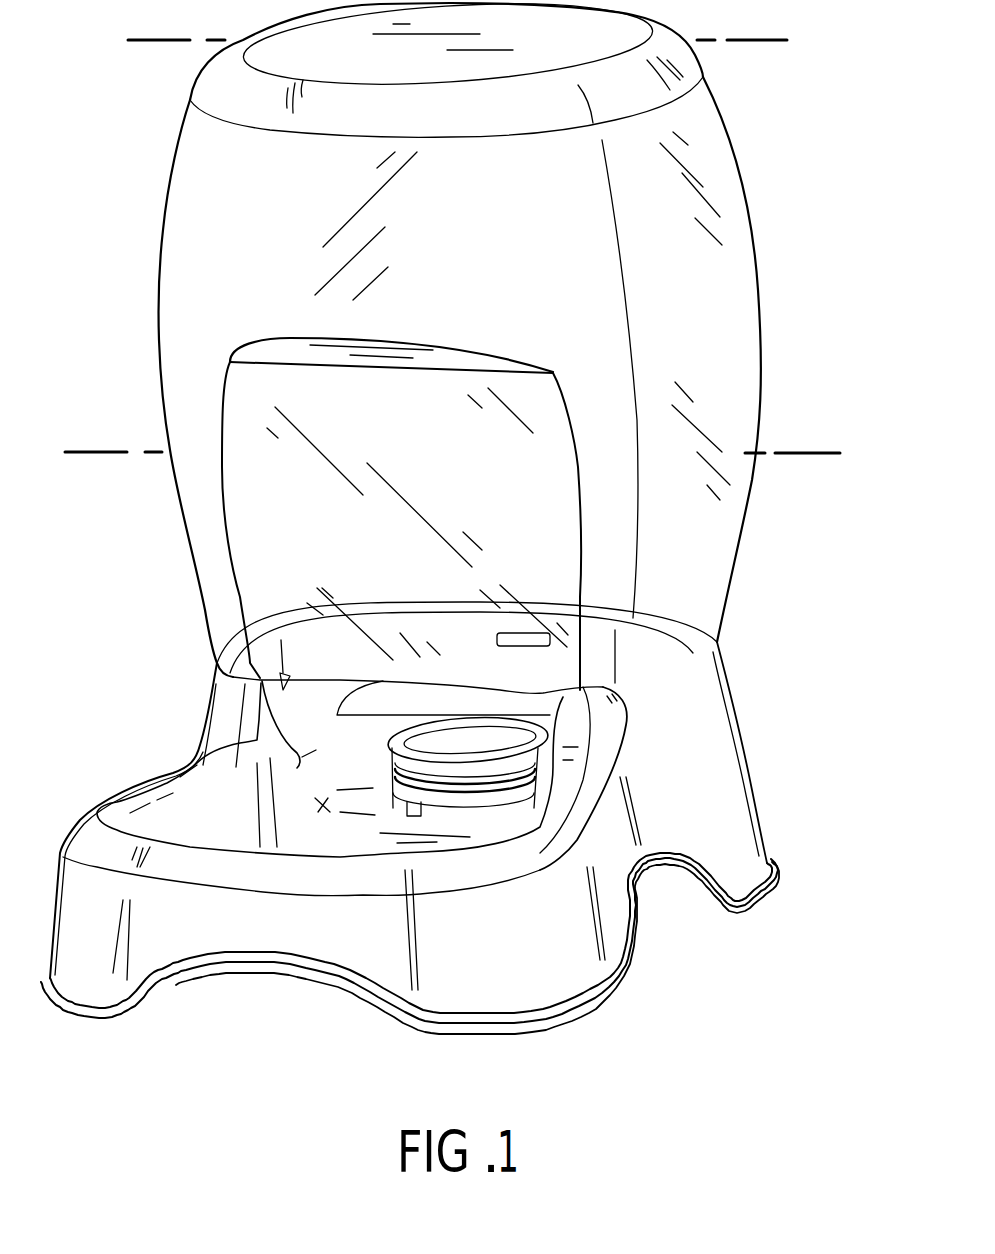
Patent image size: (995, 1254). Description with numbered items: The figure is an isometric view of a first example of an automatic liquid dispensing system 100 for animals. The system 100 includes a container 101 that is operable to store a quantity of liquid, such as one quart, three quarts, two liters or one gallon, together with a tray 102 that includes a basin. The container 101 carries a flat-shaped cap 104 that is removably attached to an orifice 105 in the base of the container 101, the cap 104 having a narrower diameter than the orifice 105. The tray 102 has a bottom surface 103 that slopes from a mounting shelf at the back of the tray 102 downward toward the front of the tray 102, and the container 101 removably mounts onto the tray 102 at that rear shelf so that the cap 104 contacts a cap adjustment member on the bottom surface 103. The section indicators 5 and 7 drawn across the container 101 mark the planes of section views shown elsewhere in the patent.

The automatic liquid dispensing system 100 is at (468, 517).
The container 101 is at (757, 380).
The tray 102 is at (752, 750).
The bottom surface 103 is at (490, 838).
The cap 104 is at (513, 790).
The orifice 105 is at (393, 772).
The section line 5- 5 is at (719, 65).
The section line 7- 7 is at (768, 478).